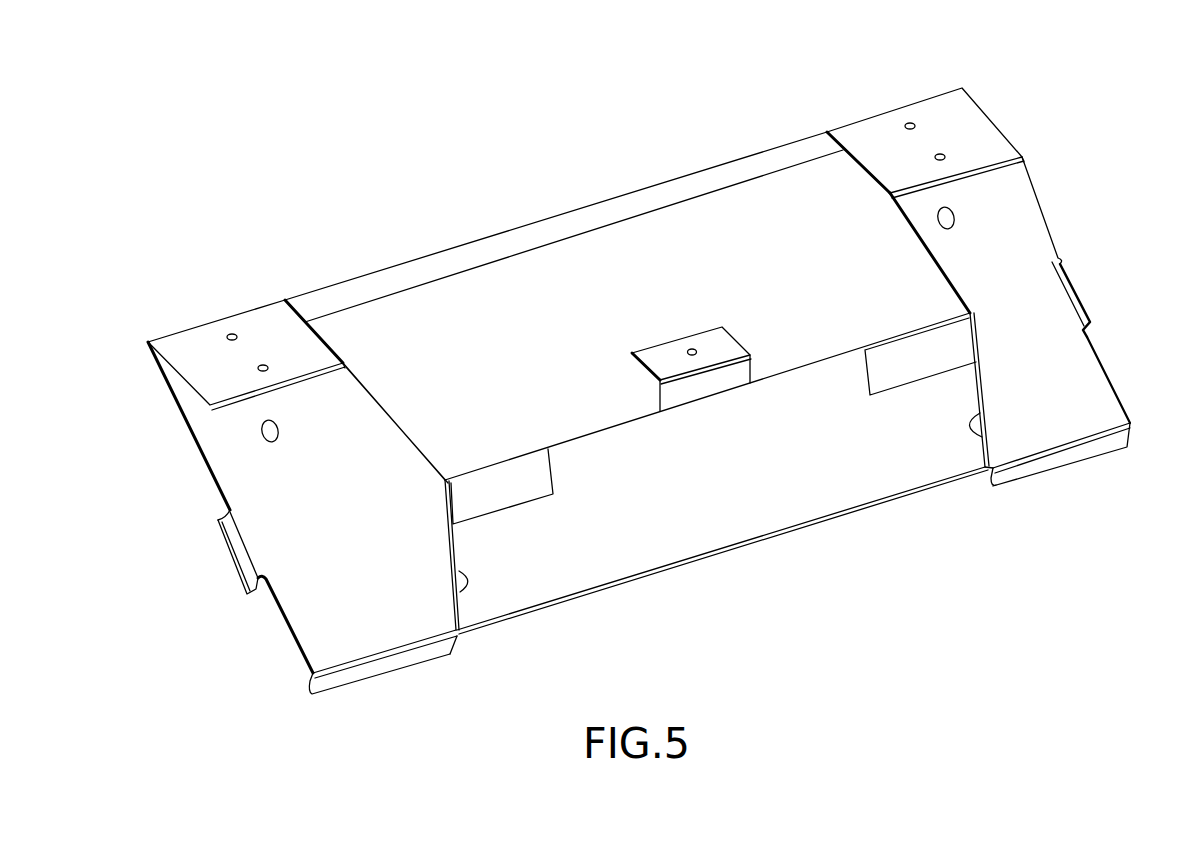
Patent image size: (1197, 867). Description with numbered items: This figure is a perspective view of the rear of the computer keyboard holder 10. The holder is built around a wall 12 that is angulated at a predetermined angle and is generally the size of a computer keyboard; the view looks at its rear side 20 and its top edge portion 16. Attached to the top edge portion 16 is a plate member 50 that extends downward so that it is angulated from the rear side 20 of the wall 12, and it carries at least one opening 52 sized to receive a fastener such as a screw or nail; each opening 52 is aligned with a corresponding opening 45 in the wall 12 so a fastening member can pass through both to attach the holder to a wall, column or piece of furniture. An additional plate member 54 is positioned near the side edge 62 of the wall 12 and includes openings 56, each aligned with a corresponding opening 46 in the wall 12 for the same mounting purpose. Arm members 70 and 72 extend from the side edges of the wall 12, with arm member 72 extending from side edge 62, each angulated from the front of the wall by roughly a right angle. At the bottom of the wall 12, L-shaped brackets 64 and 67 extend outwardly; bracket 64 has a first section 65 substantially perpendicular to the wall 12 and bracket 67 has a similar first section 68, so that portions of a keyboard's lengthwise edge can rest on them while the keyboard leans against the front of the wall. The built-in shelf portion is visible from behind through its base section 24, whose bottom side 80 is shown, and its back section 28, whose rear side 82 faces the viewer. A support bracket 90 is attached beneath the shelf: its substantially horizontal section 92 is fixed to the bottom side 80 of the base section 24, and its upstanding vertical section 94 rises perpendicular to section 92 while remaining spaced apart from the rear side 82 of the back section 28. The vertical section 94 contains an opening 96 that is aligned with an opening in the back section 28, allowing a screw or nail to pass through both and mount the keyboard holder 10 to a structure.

The computer keyboard holder 10 is at (220, 136).
The wall 12 is at (775, 157).
The top edge portion 16 is at (607, 200).
The rear side 20 is at (213, 445).
The base section 24 is at (795, 506).
The back section 28 is at (438, 328).
The opening 45 is at (953, 229).
The opening 46 is at (277, 441).
The plate member 50 is at (975, 125).
The opening 52 is at (910, 123).
The plate member 54 is at (190, 358).
The opening 56 is at (232, 334).
The side edge 62 is at (185, 410).
The bracket 64 is at (1106, 447).
The first section 65 is at (1012, 471).
The bracket 67 is at (338, 678).
The first section 68 is at (417, 657).
The arm member 70 is at (1080, 287).
The arm member 72 is at (233, 560).
The bottom side 80 is at (638, 535).
The rear side 82 is at (523, 303).
The support bracket 90 is at (723, 333).
The substantially horizontal section 92 is at (707, 385).
The upstanding vertical section 94 is at (717, 333).
The opening 96 is at (692, 349).